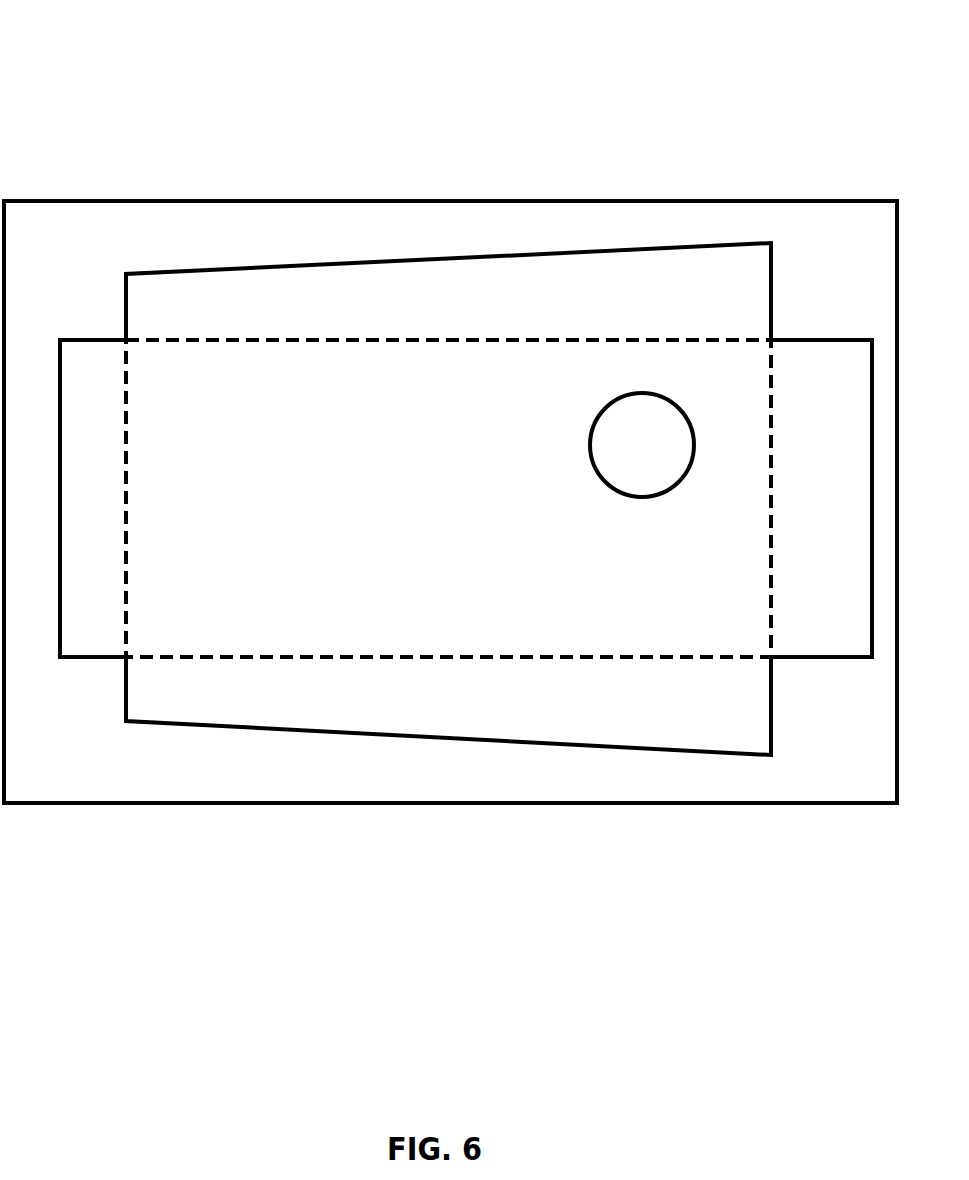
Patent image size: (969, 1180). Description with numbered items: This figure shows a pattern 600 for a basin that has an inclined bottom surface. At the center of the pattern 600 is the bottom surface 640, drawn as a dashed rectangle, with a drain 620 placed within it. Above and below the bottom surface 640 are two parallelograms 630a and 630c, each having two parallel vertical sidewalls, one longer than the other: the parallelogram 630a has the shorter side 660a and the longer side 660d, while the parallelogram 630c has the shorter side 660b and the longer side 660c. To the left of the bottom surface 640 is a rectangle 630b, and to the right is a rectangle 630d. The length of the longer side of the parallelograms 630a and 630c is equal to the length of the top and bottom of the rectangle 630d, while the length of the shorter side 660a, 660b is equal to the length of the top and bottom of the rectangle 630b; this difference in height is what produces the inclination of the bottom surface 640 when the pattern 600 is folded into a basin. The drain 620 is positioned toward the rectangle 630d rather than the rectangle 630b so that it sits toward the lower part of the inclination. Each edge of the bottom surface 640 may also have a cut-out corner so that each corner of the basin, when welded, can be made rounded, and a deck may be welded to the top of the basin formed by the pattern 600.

The pattern 600 is at (85, 88).
The drain 620 is at (616, 461).
The parallelogram 630a is at (608, 313).
The rectangle 630b is at (125, 503).
The parallelogram 630c is at (567, 728).
The rectangle 630d is at (852, 507).
The bottom surface 640 is at (373, 527).
The vertical sidewall 660a is at (126, 306).
The vertical sidewall 660b is at (126, 690).
The vertical sidewall 660c is at (768, 692).
The vertical sidewall 660d is at (771, 306).